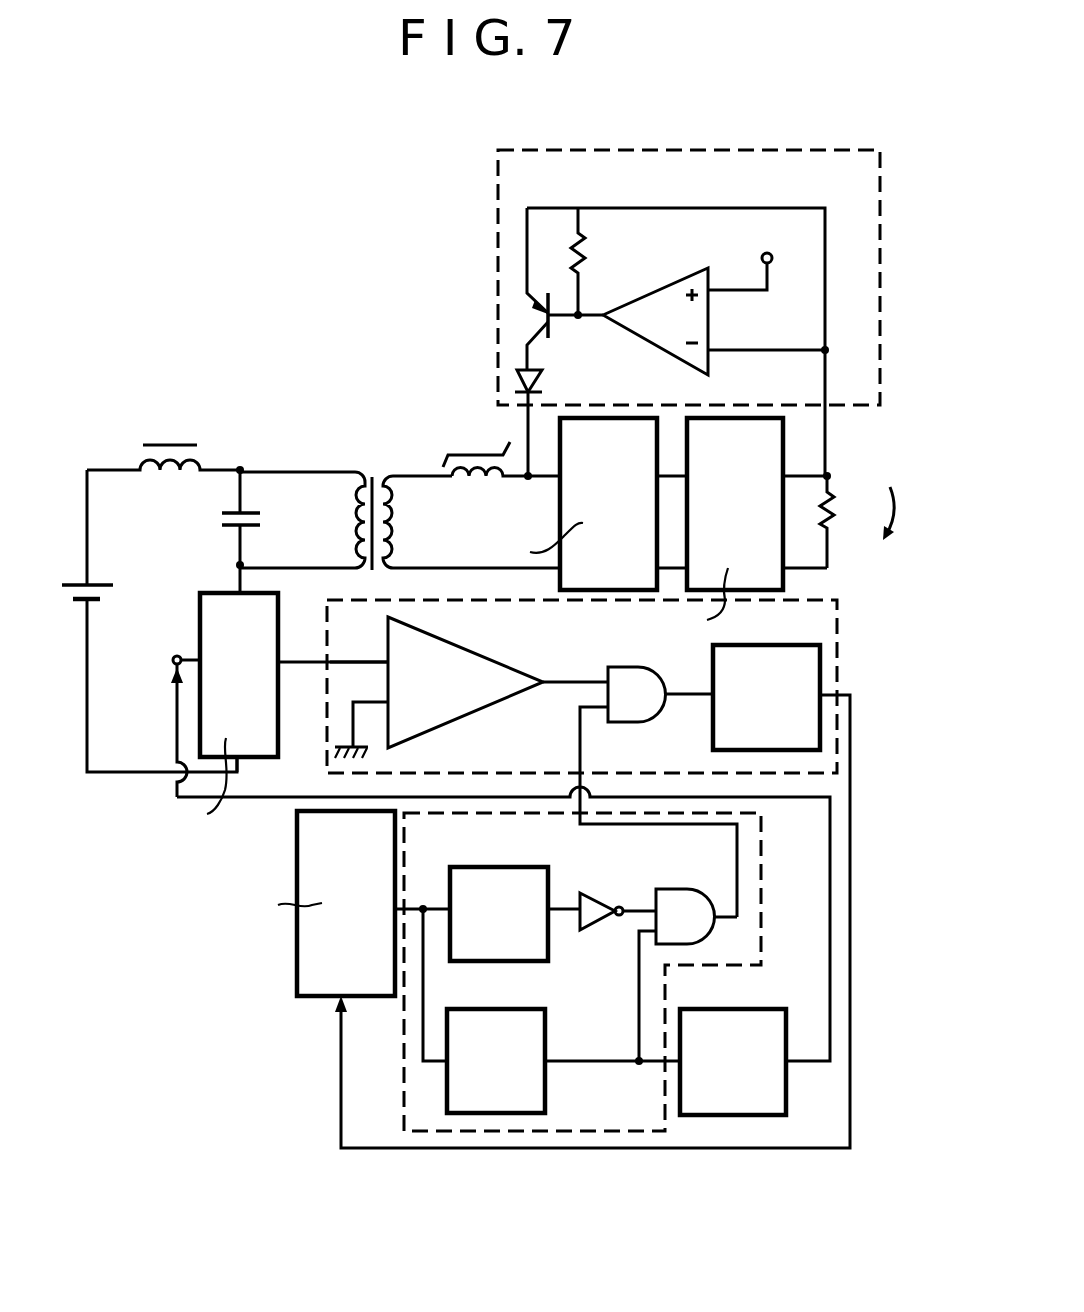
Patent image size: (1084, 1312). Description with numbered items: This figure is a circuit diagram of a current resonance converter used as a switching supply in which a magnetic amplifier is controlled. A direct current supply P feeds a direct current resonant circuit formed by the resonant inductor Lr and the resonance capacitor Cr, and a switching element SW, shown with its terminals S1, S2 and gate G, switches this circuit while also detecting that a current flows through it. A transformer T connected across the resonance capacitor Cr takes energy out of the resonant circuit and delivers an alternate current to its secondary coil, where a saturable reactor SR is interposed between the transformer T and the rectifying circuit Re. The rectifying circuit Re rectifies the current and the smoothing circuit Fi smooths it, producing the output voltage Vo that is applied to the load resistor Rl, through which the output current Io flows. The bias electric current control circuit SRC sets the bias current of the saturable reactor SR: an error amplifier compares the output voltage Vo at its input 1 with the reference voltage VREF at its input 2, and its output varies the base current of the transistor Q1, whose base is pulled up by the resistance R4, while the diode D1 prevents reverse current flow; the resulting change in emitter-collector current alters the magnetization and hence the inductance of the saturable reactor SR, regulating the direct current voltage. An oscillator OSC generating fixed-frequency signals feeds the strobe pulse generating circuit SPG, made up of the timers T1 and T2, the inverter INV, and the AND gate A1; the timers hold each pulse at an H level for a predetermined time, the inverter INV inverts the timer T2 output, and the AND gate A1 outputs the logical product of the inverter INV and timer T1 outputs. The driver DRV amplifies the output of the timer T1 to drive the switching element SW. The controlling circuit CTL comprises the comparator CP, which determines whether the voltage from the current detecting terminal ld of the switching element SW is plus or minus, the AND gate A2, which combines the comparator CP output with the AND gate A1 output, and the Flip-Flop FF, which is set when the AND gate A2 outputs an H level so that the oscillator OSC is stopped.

The bias electric current control circuit SRC is at (497, 203).
The resistance R4 is at (586, 246).
The transistor Q1 is at (537, 290).
The diode D1 is at (516, 373).
The reference voltage VREF is at (749, 255).
The rectifying circuit Re is at (598, 416).
The smoothing circuit Fi is at (727, 416).
The output voltage Vo is at (845, 474).
The load resistor Rl is at (843, 522).
The output current Io is at (903, 513).
The resonant inductor Lr is at (172, 440).
The resonance capacitor Cr is at (250, 505).
The direct current supply P is at (144, 621).
The transformer T is at (372, 467).
The saturable reactor SR is at (473, 450).
The switching element SW is at (210, 592).
The switch terminal 1 S1 is at (259, 577).
The switch terminal 2 S2 is at (257, 775).
The gate terminal G is at (183, 712).
The electric current detecting terminal ld is at (333, 646).
The input 1 is at (359, 646).
The input 2 is at (361, 716).
The controlling circuit CTL is at (838, 660).
The comparator CP is at (440, 637).
The AND gate A2 is at (627, 722).
The Flip-Flop FF is at (740, 645).
The oscillator OSC is at (297, 865).
The strobe pulse generating circuit SPG is at (503, 1135).
The timer T2 is at (490, 867).
The inverter INV is at (592, 893).
The AND gate A1 is at (678, 889).
The timer T1 is at (490, 1009).
The driver DRV is at (706, 1010).